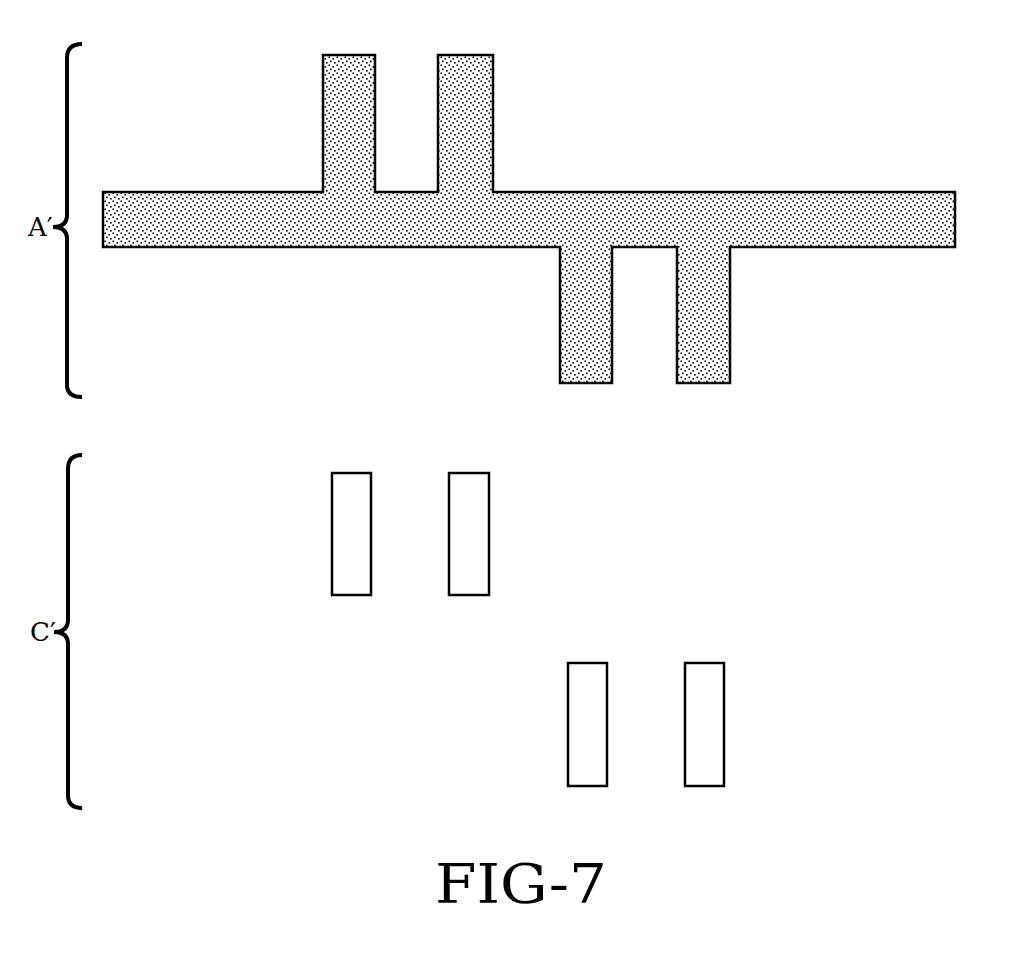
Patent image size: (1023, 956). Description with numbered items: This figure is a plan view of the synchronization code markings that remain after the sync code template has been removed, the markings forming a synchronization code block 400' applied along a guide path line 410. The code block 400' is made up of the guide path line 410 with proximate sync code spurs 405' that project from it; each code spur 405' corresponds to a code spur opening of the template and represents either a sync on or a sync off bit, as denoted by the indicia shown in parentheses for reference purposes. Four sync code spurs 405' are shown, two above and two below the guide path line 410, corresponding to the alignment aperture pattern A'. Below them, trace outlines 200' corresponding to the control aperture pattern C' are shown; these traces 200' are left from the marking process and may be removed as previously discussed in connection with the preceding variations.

The synchronization code block 400' is at (555, 231).
The sync code spurs 405' is at (541, 231).
The guide path line 410 is at (903, 222).
The trace outlines 200' is at (516, 629).